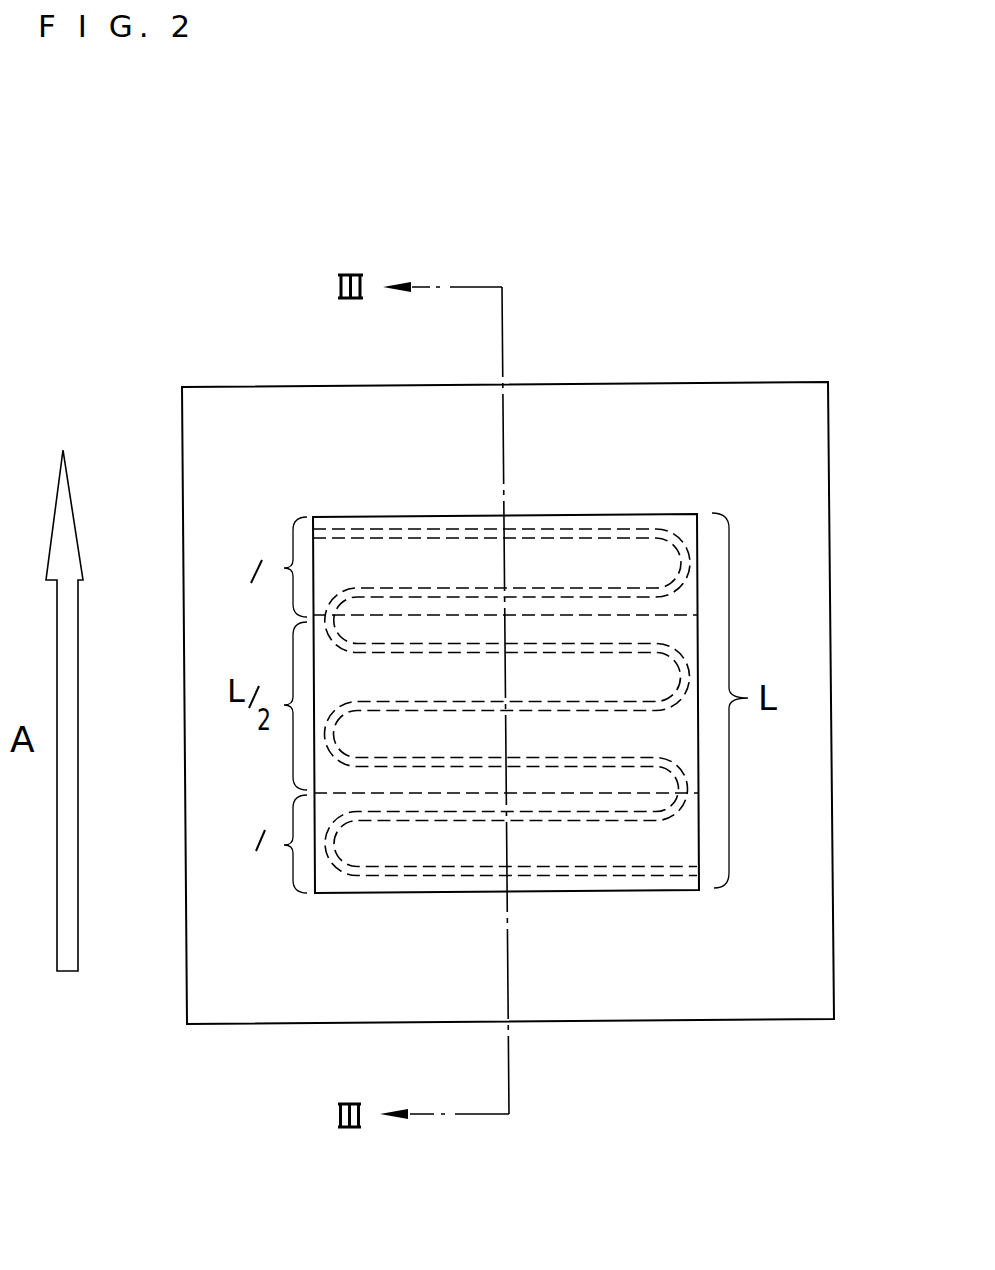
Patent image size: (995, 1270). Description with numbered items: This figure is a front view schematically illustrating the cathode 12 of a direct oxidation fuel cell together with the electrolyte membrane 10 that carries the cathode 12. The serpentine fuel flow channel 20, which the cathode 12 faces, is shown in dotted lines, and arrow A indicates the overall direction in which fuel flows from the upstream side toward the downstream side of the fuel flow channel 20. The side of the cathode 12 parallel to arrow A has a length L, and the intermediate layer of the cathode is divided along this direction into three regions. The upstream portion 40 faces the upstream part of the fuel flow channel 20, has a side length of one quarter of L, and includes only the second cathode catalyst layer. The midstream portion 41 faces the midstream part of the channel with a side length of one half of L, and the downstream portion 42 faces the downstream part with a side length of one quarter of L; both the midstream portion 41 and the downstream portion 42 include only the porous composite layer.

The electrolyte membrane 10 is at (745, 403).
The cathode 12 is at (378, 904).
The fuel flow channel 20 is at (687, 567).
The upstream portion 40 is at (623, 838).
The midstream portion 41 is at (670, 730).
The downstream portion 42 is at (577, 570).